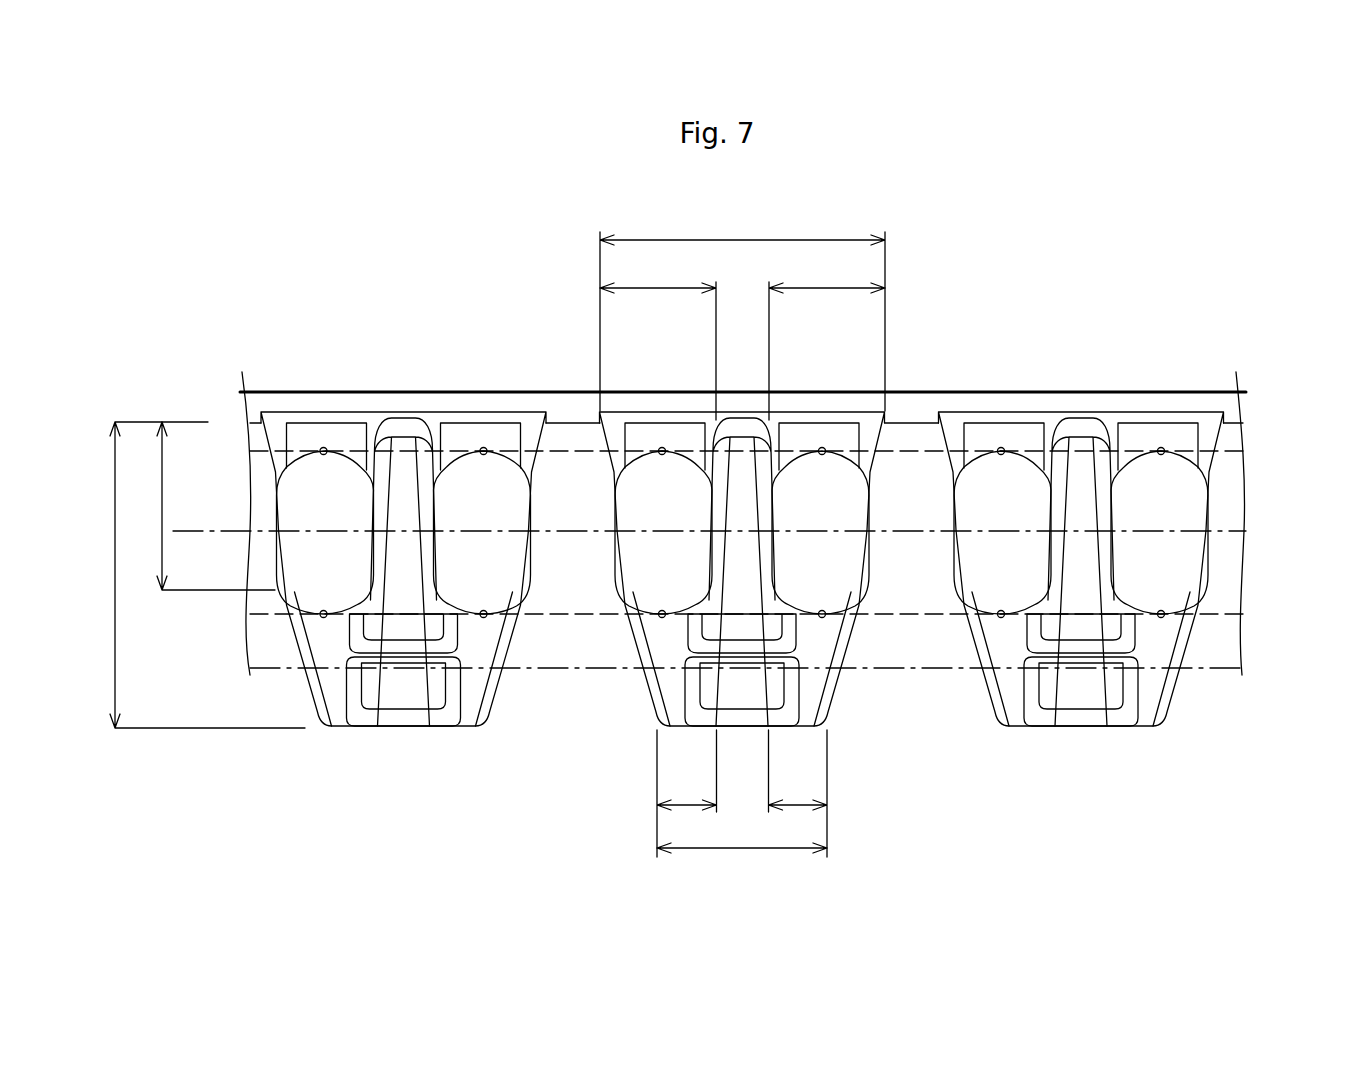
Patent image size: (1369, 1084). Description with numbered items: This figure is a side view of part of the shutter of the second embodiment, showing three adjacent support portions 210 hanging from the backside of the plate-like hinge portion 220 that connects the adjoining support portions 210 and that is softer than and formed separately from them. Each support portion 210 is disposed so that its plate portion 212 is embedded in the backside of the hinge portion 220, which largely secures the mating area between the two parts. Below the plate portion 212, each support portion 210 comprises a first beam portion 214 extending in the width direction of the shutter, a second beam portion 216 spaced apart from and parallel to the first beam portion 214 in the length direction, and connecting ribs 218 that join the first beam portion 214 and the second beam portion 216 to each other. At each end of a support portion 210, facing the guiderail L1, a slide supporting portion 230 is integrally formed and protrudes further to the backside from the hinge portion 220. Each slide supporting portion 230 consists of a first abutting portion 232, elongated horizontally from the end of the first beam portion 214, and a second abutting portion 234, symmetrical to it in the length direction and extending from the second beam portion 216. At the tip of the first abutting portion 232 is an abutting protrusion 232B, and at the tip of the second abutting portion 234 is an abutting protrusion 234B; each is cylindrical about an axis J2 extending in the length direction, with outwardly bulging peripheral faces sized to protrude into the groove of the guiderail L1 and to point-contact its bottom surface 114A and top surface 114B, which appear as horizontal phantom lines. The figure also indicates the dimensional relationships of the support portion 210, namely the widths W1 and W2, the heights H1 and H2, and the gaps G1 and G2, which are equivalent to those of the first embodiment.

The support portion 210 is at (411, 750).
The plate portion 212 is at (323, 418).
The first beam portion 214 is at (325, 700).
The second beam portion 216 is at (490, 706).
The connecting rib 218 is at (384, 697).
The hinge portion 220 is at (572, 400).
The slide supporting portion 230 is at (759, 522).
The first abutting portion 232 is at (625, 549).
The second abutting portion 234 is at (884, 514).
The abutting protrusion 232B is at (308, 578).
The abutting protrusion 234B is at (508, 565).
The bottom surface 114A is at (1232, 614).
The top surface 114B is at (1244, 458).
The axis J2 is at (709, 517).
The guiderail L1 is at (1242, 675).
The dimension H1 is at (194, 575).
The dimension H2 is at (201, 506).
The dimension W1 is at (742, 310).
The dimension W2 is at (742, 837).
The dimension G1 is at (742, 339).
The dimension G2 is at (742, 793).